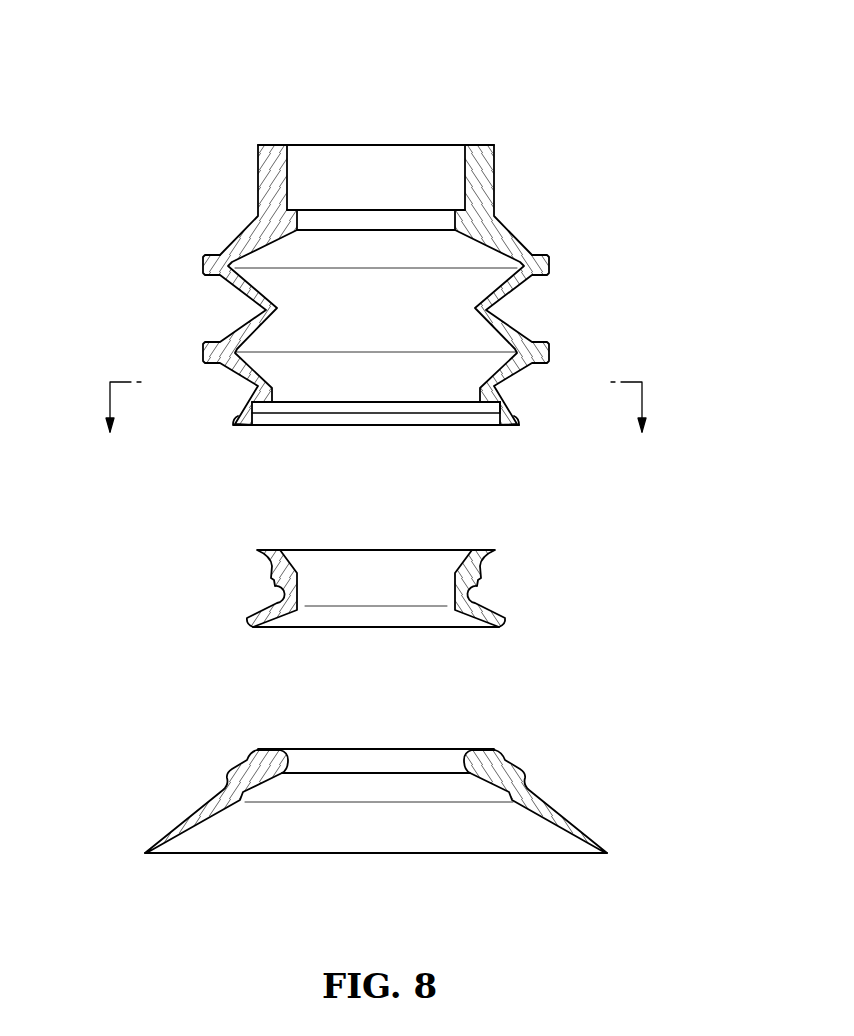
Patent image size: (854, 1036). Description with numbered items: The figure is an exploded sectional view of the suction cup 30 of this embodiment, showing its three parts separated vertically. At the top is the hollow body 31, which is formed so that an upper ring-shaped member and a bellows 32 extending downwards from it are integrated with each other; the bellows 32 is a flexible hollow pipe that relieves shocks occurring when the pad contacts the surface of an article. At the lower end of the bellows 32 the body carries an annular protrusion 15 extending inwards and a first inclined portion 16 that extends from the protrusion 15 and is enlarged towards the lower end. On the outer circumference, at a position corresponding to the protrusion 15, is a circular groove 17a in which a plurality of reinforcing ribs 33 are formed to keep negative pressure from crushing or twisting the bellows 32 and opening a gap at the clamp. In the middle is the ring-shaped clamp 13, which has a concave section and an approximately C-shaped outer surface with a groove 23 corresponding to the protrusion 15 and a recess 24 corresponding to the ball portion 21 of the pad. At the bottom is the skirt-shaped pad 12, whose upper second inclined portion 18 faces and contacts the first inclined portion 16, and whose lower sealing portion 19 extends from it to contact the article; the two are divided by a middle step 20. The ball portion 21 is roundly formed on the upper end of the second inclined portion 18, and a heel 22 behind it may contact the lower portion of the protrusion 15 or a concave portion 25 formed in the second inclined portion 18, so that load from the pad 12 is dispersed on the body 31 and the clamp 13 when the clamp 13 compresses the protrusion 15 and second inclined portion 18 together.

The suction cup 30 is at (376, 244).
The hollow body 31 is at (248, 203).
The bellows 32 is at (243, 323).
The protrusion 15 is at (476, 383).
The reinforcing ribs 33 is at (250, 393).
The circular groove 17a is at (515, 393).
The concave portion 25 is at (257, 405).
The first inclined portion 16 is at (513, 424).
The clamp 13 is at (404, 573).
The groove 23 is at (272, 572).
The recess 24 is at (278, 593).
The pad 12 is at (391, 797).
The second inclined portion 18 is at (241, 767).
The sealing portion 19 is at (192, 818).
The step 20 is at (247, 792).
The ball portion 21 is at (462, 753).
The heel 22 is at (503, 756).